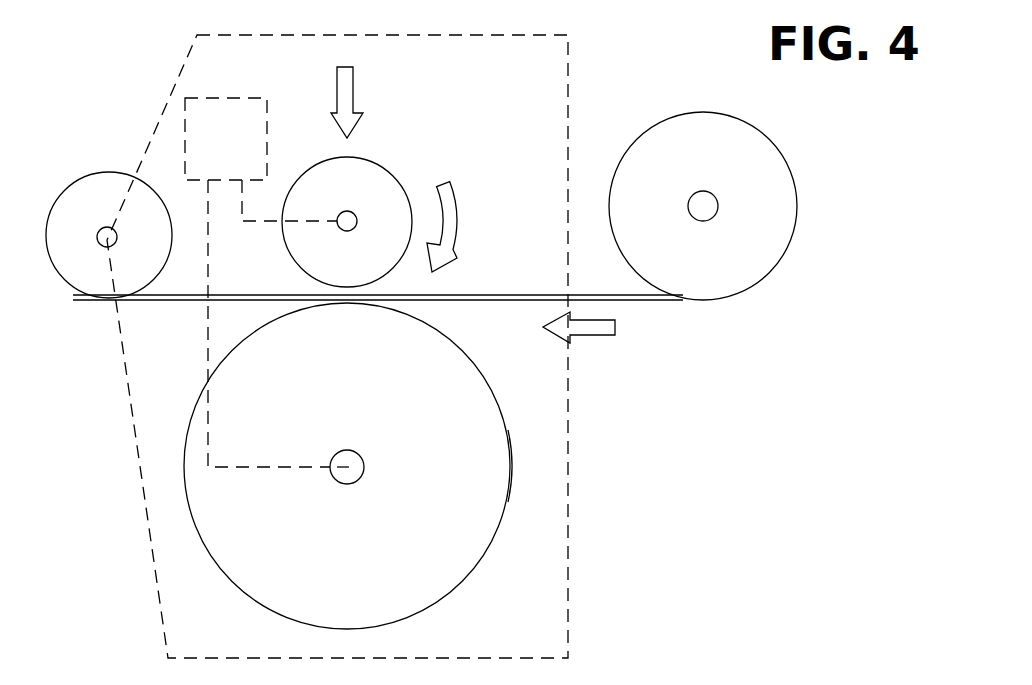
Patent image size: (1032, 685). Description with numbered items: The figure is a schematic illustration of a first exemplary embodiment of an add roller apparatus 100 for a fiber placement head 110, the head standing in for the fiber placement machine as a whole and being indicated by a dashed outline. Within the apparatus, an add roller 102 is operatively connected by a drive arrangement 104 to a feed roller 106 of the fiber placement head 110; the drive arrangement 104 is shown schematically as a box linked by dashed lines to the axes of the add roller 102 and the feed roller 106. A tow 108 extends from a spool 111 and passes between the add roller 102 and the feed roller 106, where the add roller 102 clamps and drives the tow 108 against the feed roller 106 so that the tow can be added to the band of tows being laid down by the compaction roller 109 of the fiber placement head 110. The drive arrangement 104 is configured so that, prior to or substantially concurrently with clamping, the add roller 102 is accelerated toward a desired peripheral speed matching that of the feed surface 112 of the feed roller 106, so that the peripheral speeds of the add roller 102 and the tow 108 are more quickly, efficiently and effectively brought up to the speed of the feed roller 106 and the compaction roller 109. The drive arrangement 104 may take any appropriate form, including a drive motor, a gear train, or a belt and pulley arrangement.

The add roller apparatus 100 is at (586, 87).
The add roller 102 is at (377, 182).
The drive arrangement 104 is at (250, 155).
The feed roller 106 is at (492, 492).
The tow 108 is at (630, 302).
The compaction roller 109 is at (71, 182).
The fiber placement head 110 is at (332, 341).
The spool 111 is at (757, 177).
The feed surface 112 is at (512, 448).